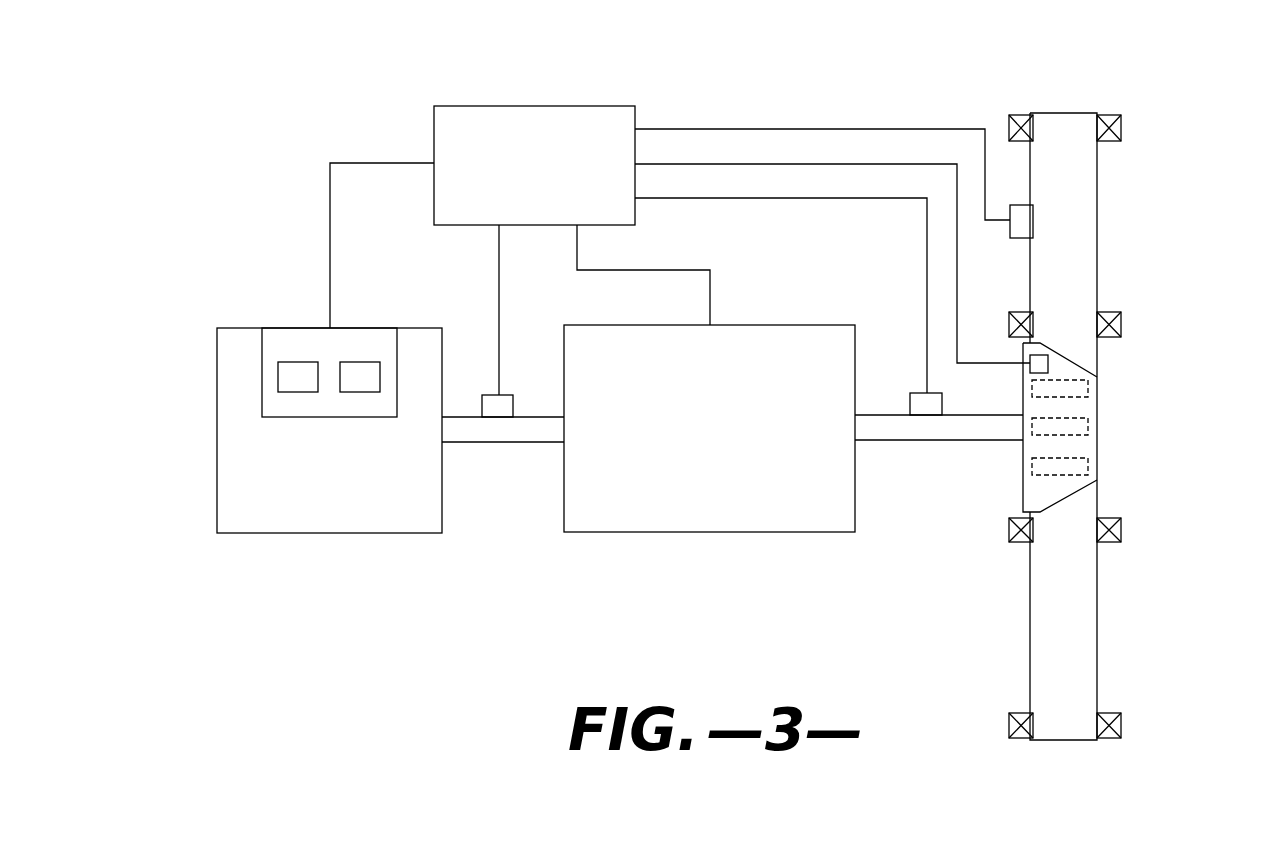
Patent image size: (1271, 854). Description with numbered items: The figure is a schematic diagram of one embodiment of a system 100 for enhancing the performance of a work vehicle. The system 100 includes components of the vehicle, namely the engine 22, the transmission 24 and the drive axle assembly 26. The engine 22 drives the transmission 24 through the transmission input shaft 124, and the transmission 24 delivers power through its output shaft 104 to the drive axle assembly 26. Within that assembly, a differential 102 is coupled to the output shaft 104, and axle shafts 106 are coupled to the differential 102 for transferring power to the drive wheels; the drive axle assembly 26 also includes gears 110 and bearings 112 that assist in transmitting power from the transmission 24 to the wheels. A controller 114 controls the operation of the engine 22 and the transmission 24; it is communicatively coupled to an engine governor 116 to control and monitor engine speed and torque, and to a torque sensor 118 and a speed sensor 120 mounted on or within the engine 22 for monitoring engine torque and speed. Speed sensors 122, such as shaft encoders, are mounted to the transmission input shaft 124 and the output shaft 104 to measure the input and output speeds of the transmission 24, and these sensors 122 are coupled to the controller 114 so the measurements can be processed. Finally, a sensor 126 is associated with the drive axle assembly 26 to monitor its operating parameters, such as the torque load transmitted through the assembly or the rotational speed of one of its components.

The system 100 is at (240, 155).
The engine 22 is at (340, 486).
The transmission 24 is at (725, 439).
The drive axle assembly 26 is at (1183, 215).
The differential 102 is at (1023, 465).
The output shaft 104 is at (963, 430).
The axle shaft 106 is at (1083, 222).
The gears 110 is at (1090, 467).
The bearings 112 is at (1121, 125).
The controller 114 is at (556, 172).
The engine governor 116 is at (262, 367).
The torque sensor 118 is at (298, 362).
The speed sensor 120 is at (360, 362).
The speed sensor 122 is at (503, 407).
The transmission input shaft 124 is at (535, 428).
The sensor 126 is at (1020, 225).